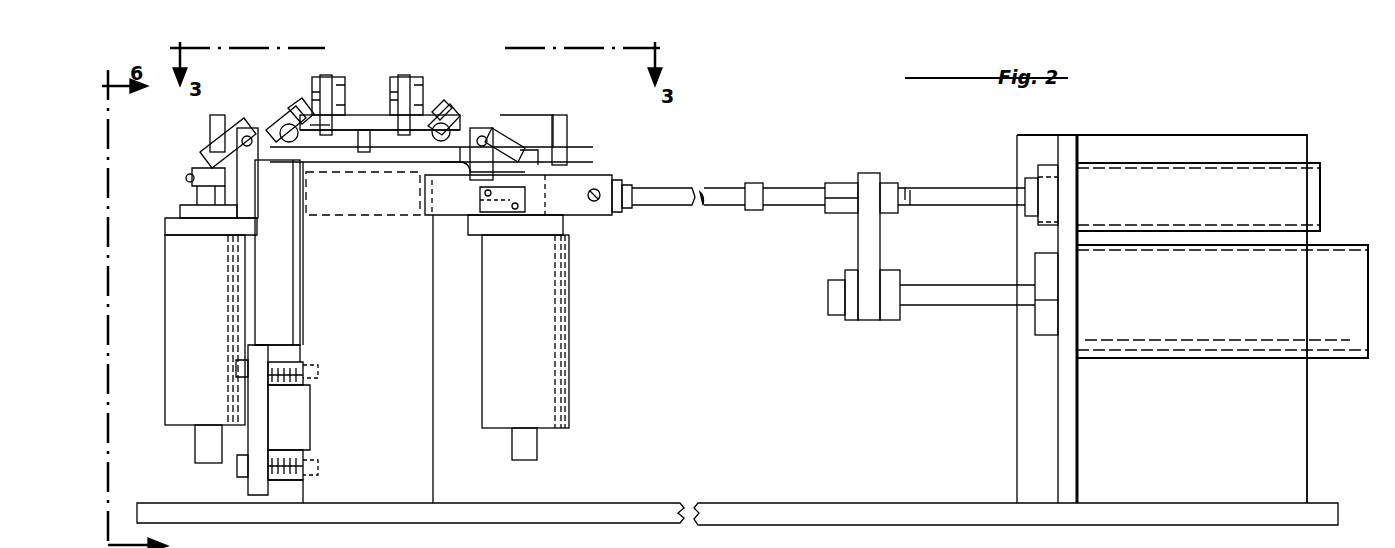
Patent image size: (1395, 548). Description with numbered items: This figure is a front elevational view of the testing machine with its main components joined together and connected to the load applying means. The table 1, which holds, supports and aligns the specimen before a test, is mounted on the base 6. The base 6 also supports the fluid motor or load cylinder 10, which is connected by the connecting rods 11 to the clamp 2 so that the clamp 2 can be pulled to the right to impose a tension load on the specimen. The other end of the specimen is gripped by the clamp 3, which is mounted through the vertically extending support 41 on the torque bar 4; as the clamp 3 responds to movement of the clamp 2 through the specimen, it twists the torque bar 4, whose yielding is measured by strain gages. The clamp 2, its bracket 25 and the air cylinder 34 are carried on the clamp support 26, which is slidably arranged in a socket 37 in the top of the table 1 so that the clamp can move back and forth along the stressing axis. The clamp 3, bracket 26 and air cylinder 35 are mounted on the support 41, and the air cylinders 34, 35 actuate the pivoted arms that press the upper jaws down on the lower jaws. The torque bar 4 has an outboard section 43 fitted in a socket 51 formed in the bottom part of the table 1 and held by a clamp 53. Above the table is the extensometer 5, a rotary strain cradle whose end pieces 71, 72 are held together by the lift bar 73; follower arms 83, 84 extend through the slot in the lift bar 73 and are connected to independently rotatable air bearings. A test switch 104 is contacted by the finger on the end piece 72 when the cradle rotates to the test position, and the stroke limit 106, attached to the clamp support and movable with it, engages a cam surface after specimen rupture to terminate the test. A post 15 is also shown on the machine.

The table 1 is at (379, 303).
The clamp 2 is at (484, 104).
The clamp 3 is at (250, 116).
The torque bar 4 is at (296, 426).
The extensometer 5 is at (362, 108).
The base 6 is at (620, 503).
The load cylinder 10 is at (1188, 305).
The connecting rods 11 is at (790, 218).
The stop post 15 is at (362, 152).
The bracket 25 is at (555, 228).
The bracket 26 is at (176, 228).
The air cylinder 34 is at (540, 338).
The air cylinder 35 is at (190, 298).
The socket 37 is at (378, 212).
The vertically extending support 41 is at (282, 265).
The outboard section 43 is at (295, 438).
The socket 51 is at (312, 400).
The clamp 53 is at (262, 484).
The end piece 71 is at (568, 135).
The end piece 72 is at (210, 124).
The lift bar 73 is at (530, 122).
The arm 83 is at (322, 78).
The arm 84 is at (406, 78).
The test switch 104 is at (1016, 525).
The stroke limit 106 is at (488, 212).